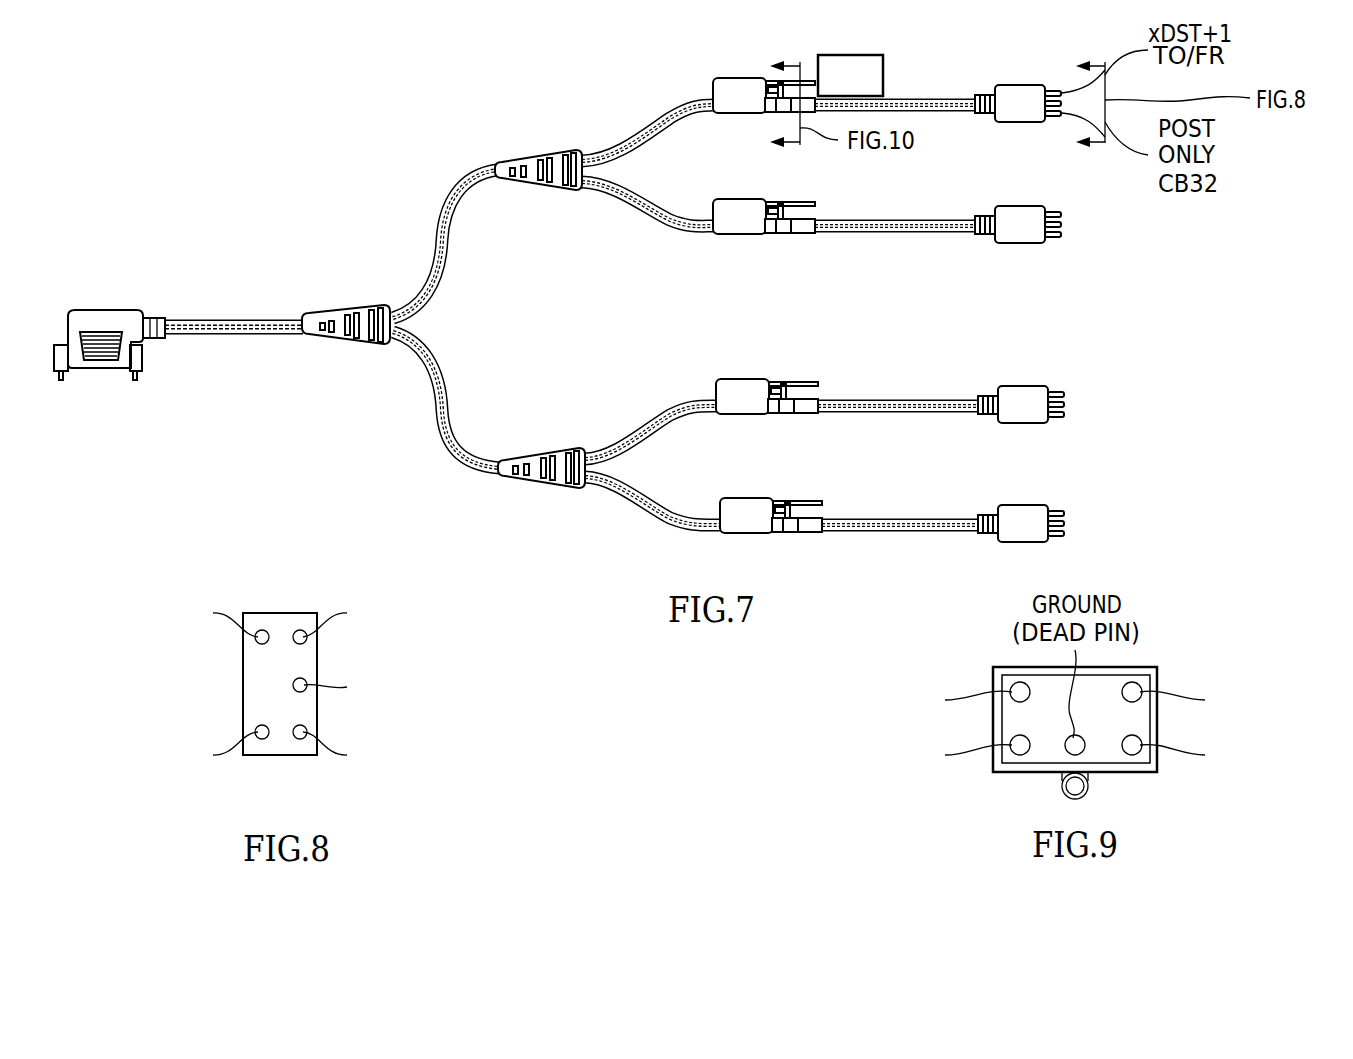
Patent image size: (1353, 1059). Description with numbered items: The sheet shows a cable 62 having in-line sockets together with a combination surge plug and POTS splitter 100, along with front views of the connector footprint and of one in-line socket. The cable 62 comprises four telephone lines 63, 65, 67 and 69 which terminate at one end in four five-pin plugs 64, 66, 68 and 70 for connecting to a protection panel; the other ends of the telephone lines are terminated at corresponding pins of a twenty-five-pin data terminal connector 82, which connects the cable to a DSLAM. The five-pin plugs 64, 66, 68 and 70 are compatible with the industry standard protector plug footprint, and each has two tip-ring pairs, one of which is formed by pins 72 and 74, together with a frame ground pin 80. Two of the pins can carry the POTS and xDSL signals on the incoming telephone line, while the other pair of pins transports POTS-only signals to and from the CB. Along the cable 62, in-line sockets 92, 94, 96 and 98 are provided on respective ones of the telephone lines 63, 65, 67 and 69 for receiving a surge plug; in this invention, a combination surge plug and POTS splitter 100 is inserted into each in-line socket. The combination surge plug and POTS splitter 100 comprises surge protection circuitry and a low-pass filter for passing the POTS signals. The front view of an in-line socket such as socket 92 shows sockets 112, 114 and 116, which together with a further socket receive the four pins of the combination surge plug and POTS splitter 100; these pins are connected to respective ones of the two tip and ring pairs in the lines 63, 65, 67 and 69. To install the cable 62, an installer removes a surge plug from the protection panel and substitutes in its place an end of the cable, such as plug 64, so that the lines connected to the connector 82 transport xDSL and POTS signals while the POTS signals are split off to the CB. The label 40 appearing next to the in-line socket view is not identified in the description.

In FIG. 7, the cable 62 is at (326, 276).
In FIG. 7, the 25-pin data terminal connector 82 is at (113, 310).
In FIG. 7, the telephone line 63 is at (905, 100).
In FIG. 7, the 5-pin plug 64 is at (1012, 90).
In FIG. 7, the telephone line 65 is at (905, 222).
In FIG. 7, the 5-pin plug 66 is at (1025, 208).
In FIG. 7, the telephone line 67 is at (905, 402).
In FIG. 7, the 5-pin plug 68 is at (1025, 388).
In FIG. 7, the telephone line 69 is at (905, 522).
In FIG. 7, the 5-pin plug 70 is at (1025, 508).
In FIG. 7, the in-line socket 92 is at (727, 78).
In FIG. 7, the in-line socket 94 is at (748, 199).
In FIG. 7, the in-line socket 96 is at (750, 379).
In FIG. 7, the in-line socket 98 is at (753, 498).
In FIG. 7, the combination surge plug and POTS splitter 100 is at (832, 55).
In FIG. 8, the tip-ring pair 72 is at (148, 615).
In FIG. 8, the tip-ring pair 74 is at (148, 756).
In FIG. 8, the frame ground pin 80 is at (435, 684).
In FIG. 9, the ring drop pin 40 is at (1272, 690).
In FIG. 9, the socket 112 is at (873, 690).
In FIG. 9, the socket 114 is at (1272, 770).
In FIG. 9, the socket 116 is at (900, 770).